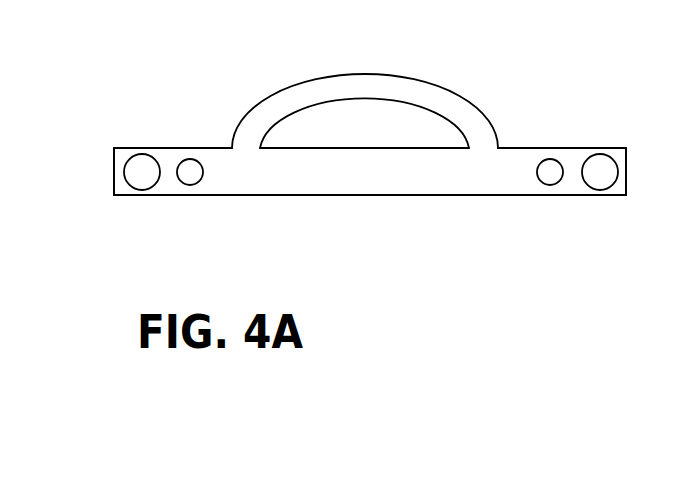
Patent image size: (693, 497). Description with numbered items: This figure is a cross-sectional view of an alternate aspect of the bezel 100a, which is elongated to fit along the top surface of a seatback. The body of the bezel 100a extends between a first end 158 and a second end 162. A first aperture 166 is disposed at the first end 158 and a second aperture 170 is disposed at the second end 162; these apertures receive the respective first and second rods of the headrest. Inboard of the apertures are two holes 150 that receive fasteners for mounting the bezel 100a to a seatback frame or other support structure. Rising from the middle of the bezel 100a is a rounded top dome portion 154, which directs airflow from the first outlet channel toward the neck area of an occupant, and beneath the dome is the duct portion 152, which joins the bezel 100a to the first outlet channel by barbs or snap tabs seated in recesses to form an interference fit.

The bezel 100a is at (448, 197).
The holes 150 is at (188, 168).
The duct portion 152 is at (382, 95).
The rounded top dome portion 154 is at (358, 73).
The first end 158 is at (113, 157).
The second end 162 is at (627, 157).
The first aperture 166 is at (143, 168).
The second aperture 170 is at (598, 168).